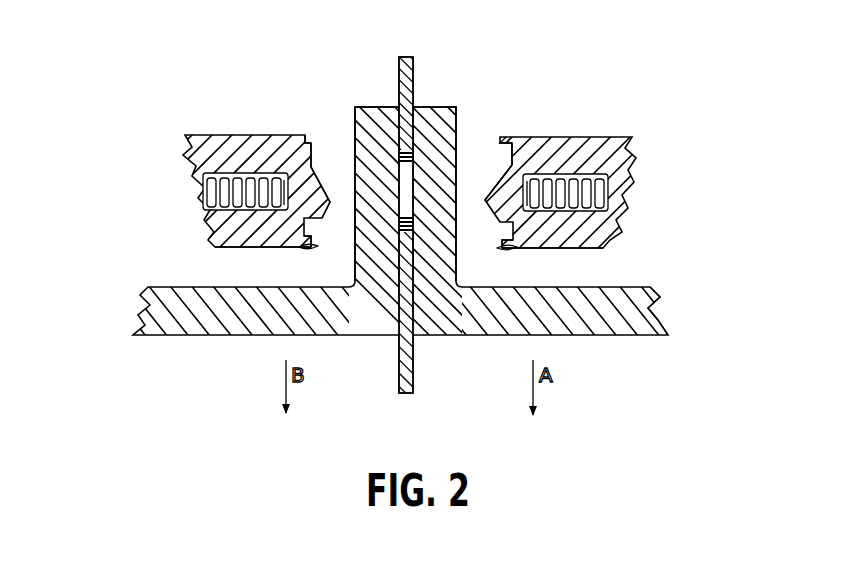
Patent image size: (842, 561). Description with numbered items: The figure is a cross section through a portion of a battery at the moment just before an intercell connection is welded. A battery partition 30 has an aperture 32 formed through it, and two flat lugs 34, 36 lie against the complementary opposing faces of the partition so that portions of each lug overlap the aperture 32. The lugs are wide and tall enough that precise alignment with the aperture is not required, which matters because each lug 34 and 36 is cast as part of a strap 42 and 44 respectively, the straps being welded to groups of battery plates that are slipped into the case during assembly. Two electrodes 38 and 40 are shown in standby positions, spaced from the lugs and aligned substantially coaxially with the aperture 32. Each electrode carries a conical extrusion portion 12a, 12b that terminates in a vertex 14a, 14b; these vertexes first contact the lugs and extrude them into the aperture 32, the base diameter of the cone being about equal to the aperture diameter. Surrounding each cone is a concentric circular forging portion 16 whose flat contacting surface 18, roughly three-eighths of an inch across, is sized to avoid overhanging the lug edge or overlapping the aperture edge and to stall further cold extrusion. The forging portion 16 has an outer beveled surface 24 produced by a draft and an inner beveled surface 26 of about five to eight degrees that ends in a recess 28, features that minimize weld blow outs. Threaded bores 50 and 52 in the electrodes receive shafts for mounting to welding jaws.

The conical extrusion portion 12a is at (322, 172).
The conical extrusion portion 12b is at (489, 172).
The vertex 14a is at (331, 197).
The vertex 14b is at (481, 198).
The forging portion 16 is at (268, 246).
The contacting surface 18 is at (313, 136).
The outer beveled surface 24 is at (308, 136).
The inner beveled surface 26 is at (314, 244).
The recess 28 is at (313, 160).
The battery partition 30 is at (397, 57).
The aperture 32 is at (417, 153).
The lug 34 is at (388, 107).
The lug 36 is at (423, 115).
The electrode 38 is at (274, 131).
The electrode 40 is at (538, 132).
The strap 42 is at (143, 300).
The strap 44 is at (638, 302).
The threaded bore 50 is at (203, 182).
The threaded bore 52 is at (610, 185).